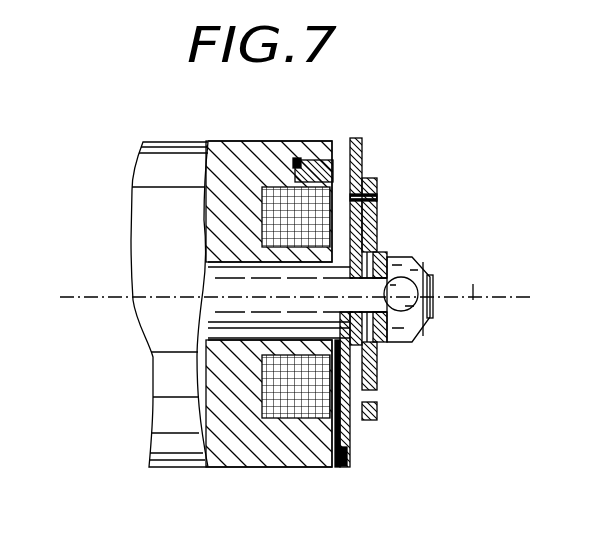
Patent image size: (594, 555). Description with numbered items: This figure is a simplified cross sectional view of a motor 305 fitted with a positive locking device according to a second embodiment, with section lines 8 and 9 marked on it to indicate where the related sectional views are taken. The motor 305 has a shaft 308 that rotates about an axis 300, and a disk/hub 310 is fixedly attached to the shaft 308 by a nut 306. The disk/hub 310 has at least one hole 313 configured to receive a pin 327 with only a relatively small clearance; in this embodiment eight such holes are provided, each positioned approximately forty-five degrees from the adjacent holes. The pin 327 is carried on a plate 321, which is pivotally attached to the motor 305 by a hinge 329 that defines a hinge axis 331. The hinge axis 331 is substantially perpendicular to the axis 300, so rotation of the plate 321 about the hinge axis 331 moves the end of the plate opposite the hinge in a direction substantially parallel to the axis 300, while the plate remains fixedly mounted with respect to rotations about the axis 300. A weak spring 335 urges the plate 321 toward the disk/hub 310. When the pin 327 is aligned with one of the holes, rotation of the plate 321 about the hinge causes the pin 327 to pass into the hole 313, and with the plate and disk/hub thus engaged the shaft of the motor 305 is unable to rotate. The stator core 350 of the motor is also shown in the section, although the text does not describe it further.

The axis 300 is at (99, 290).
The motor 305 is at (181, 142).
The nut 306 is at (446, 322).
The shaft 308 is at (473, 297).
The disk/hub 310 is at (378, 366).
The hole 313 is at (377, 208).
The plate 321 is at (363, 148).
The pin 327 is at (378, 197).
The hinge 329 is at (337, 470).
The hinge axis 331 is at (337, 470).
The weak spring 335 is at (321, 158).
The stator core 350 is at (249, 470).
The section line 8- 8 is at (365, 113).
The section line 9- 9 is at (353, 128).